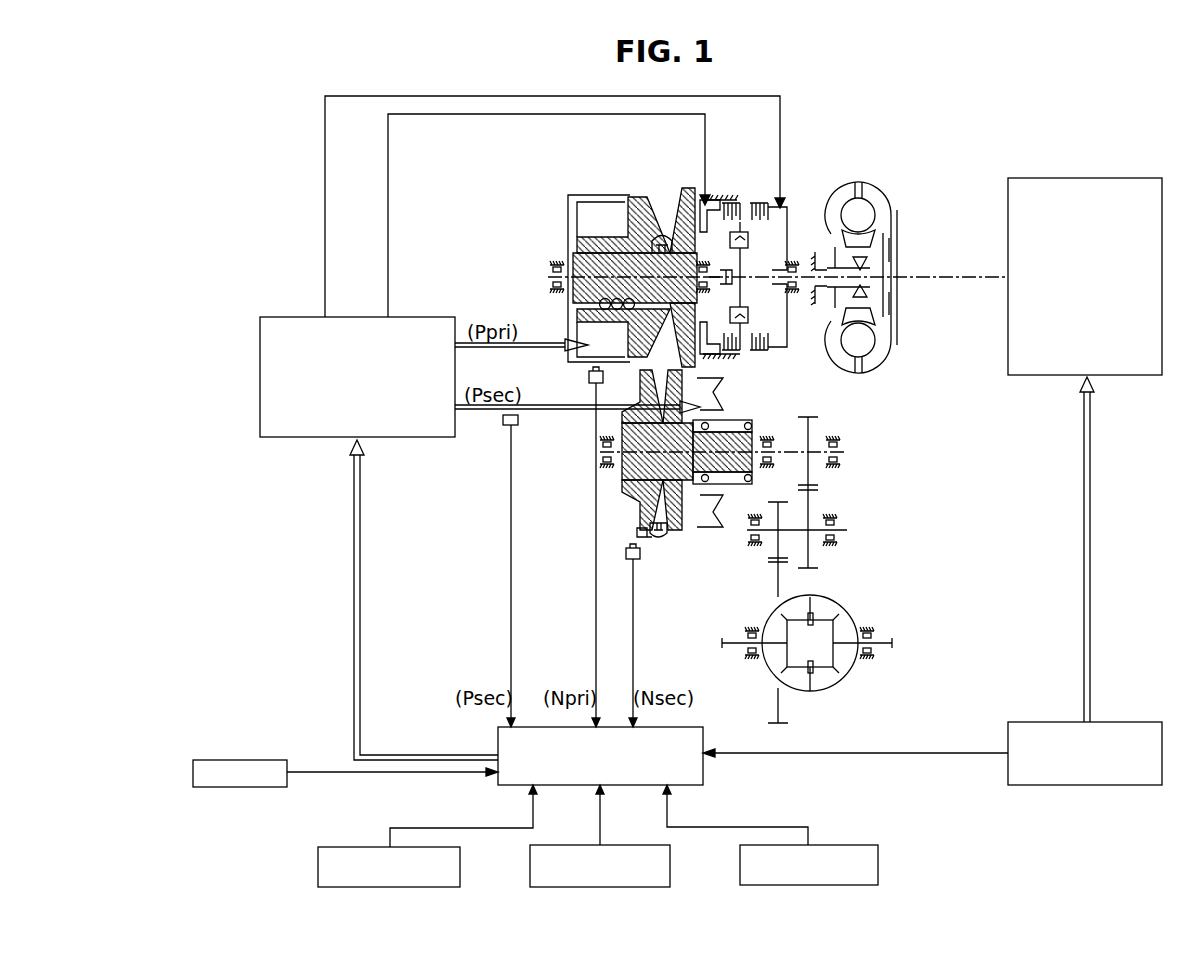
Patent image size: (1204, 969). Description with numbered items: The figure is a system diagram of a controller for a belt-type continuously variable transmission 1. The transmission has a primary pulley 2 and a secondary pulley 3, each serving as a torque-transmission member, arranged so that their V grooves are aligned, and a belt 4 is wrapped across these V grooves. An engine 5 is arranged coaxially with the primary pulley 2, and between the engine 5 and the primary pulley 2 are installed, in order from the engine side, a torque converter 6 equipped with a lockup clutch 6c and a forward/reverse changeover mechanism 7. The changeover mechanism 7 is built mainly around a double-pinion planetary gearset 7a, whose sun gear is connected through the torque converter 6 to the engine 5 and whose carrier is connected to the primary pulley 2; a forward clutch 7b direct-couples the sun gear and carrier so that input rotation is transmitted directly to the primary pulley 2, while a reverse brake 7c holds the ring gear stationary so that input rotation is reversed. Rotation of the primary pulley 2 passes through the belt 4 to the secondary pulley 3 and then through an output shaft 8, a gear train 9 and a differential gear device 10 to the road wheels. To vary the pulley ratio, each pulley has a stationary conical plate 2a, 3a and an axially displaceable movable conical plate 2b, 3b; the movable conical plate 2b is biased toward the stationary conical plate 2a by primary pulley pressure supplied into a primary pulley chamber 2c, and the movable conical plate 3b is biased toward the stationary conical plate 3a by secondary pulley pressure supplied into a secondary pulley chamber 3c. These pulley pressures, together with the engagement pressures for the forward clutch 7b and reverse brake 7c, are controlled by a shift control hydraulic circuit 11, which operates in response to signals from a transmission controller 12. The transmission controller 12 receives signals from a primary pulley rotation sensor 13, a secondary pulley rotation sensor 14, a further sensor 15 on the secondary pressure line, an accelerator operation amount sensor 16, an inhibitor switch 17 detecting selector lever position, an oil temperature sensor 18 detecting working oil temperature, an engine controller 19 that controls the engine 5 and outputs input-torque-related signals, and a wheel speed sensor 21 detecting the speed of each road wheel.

The belt-type continuously variable transmission 1 is at (578, 186).
The primary pulley 2 is at (674, 196).
The stationary conical plate 2a is at (692, 194).
The movable conical plate 2b is at (638, 195).
The primary pulley chamber 2c is at (590, 216).
The secondary pulley 3 is at (674, 497).
The stationary conical plate 3a is at (640, 522).
The movable conical plate 3b is at (666, 538).
The secondary pulley chamber 3c is at (690, 527).
The belt 4 is at (660, 232).
The engine 5 is at (1103, 178).
The torque converter 6 is at (884, 239).
The lockup clutch 6c is at (895, 252).
The forward/reverse changeover mechanism 7 is at (743, 228).
The double-pinion planetary gearset 7a is at (745, 220).
The forward clutch 7b is at (770, 200).
The reverse brake 7c is at (738, 200).
The output shaft 8 is at (790, 450).
The gear train 9 is at (862, 482).
The differential gear device 10 is at (855, 603).
The shift control hydraulic circuit 11 is at (282, 317).
The transmission controller 12 is at (497, 740).
The primary pulley rotation sensor 13 is at (588, 377).
The secondary pulley rotation sensor 14 is at (635, 560).
The secondary pressure sensor 15 is at (508, 426).
The accelerator operation amount sensor 16 is at (335, 847).
The inhibitor switch 17 is at (530, 867).
The oil temperature sensor 18 is at (860, 845).
The engine controller 19 is at (1118, 722).
The wheel speed sensor 21 is at (220, 790).